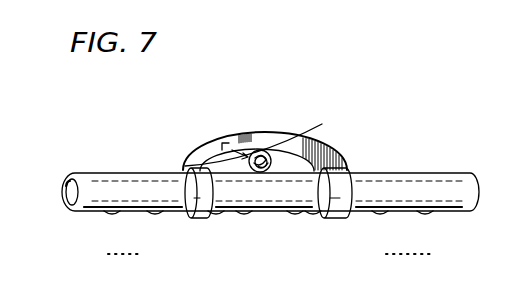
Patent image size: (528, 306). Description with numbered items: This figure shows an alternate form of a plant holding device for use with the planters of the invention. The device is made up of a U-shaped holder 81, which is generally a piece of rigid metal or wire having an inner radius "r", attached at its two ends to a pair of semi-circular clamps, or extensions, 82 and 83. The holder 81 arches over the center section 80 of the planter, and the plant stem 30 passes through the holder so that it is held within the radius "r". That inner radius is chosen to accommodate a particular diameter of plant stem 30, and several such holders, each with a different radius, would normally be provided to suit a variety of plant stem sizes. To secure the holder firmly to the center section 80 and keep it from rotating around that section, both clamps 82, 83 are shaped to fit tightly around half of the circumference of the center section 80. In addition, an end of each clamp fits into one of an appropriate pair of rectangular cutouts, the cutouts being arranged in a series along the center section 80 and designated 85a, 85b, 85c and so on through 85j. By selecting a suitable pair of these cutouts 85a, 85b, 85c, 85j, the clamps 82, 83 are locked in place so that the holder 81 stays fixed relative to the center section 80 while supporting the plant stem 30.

The center section 80 is at (415, 188).
The U-shaped holder 81 is at (245, 132).
The semi-circular clamp 82 is at (195, 177).
The semi-circular clamp 83 is at (340, 183).
The plant stem 30 is at (316, 139).
The rectangular cutout 85a is at (294, 215).
The rectangular cutout 85b is at (313, 220).
The rectangular cutout 85c is at (381, 218).
The rectangular cutout 85j is at (425, 218).